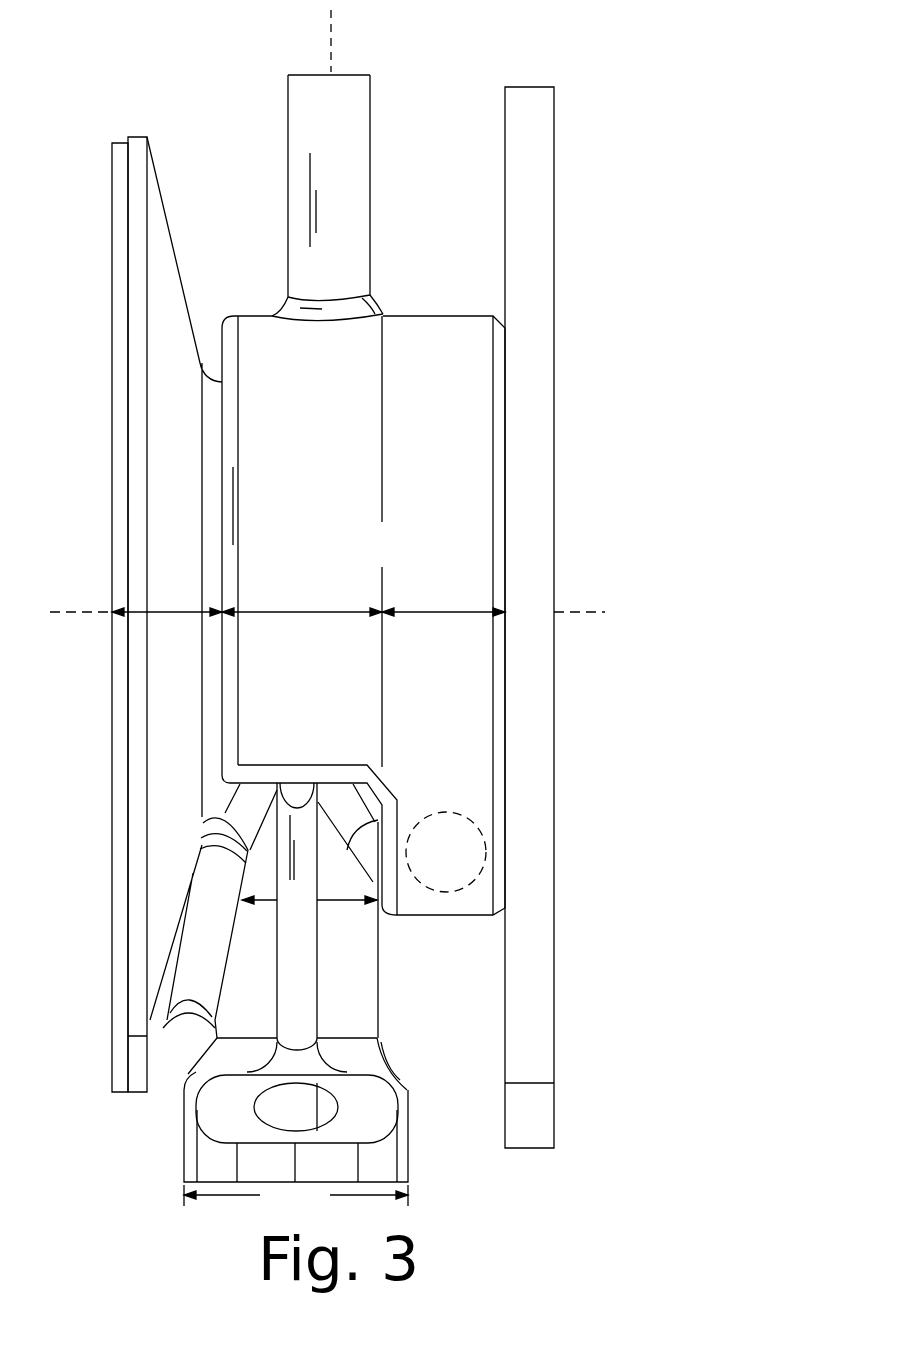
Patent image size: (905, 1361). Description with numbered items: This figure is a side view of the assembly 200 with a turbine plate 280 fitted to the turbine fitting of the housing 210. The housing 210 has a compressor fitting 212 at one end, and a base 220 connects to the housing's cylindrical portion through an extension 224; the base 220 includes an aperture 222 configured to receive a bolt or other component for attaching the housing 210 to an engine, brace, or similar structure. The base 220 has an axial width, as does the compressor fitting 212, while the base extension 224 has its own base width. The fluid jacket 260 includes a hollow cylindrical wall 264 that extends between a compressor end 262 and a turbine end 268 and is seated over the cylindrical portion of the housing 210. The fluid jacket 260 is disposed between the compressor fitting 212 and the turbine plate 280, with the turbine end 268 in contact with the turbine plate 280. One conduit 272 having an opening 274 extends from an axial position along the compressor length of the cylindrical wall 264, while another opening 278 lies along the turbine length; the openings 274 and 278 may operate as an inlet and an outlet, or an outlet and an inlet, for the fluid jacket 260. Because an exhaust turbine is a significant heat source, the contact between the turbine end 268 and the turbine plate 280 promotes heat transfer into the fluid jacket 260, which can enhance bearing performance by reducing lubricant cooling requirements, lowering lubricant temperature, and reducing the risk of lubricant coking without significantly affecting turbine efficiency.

The assembly 200 is at (248, 126).
The housing 210 is at (142, 136).
The compressor fitting 212 is at (123, 520).
The base 220 is at (406, 1110).
The aperture 222 is at (253, 1103).
The extension 224 is at (367, 978).
The fluid jacket 260 is at (417, 315).
The compressor end 262 is at (222, 452).
The cylindrical wall 264 is at (386, 558).
The turbine end 268 is at (505, 457).
The conduit 272 is at (371, 215).
The opening 274 is at (352, 73).
The opening 278 is at (467, 818).
The turbine plate 280 is at (556, 340).